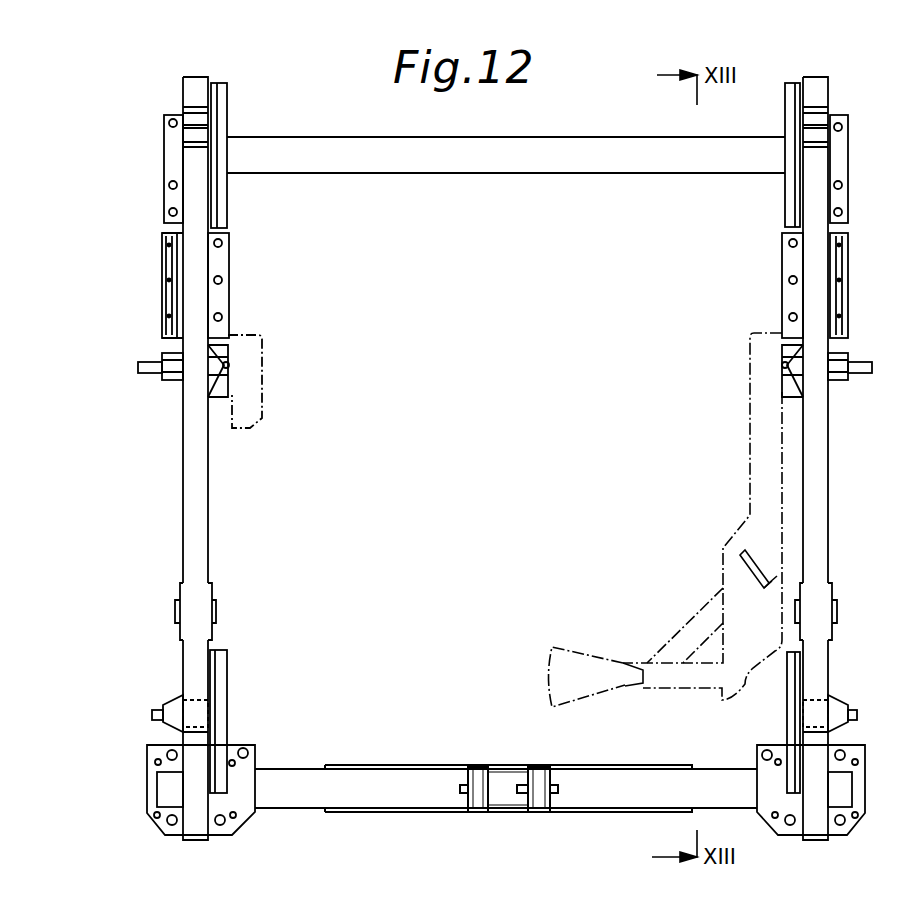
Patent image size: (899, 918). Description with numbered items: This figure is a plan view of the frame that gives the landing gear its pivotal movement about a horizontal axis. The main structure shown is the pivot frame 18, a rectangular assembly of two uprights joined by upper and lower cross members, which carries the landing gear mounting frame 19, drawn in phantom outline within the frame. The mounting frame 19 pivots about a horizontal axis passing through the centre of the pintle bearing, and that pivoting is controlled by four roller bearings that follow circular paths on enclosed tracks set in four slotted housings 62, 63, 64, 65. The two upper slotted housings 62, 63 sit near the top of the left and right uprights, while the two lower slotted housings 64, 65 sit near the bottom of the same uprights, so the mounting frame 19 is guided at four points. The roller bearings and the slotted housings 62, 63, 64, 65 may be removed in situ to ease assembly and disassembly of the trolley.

The pivot frame 18 is at (832, 458).
The landing gear mounting frame 19 is at (750, 448).
The slotted housing 62 is at (222, 198).
The slotted housing 63 is at (792, 200).
The slotted housing 64 is at (222, 690).
The slotted housing 65 is at (790, 690).